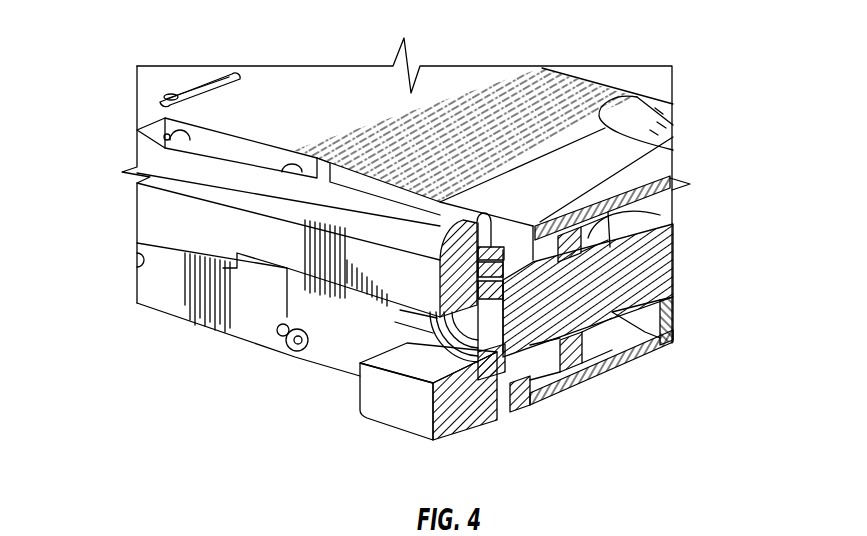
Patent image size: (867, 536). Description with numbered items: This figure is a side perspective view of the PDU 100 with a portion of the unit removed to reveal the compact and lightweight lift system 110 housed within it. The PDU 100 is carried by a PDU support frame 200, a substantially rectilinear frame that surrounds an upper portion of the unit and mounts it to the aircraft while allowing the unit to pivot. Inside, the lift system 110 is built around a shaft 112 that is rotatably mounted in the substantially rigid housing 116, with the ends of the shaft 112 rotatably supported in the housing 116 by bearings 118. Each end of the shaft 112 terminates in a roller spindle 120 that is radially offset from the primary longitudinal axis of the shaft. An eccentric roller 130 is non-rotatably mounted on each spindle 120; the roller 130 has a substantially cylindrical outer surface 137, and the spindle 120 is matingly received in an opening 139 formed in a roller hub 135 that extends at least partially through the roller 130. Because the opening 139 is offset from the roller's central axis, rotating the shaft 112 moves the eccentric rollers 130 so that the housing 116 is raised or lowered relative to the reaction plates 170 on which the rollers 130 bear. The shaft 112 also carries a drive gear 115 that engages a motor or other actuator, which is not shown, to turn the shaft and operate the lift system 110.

The PDU 100 is at (122, 98).
The PDU support frame 200 is at (150, 191).
The outer surfaces 137 is at (493, 236).
The eccentric rollers 130 is at (657, 143).
The housing 116 is at (672, 163).
The shaft 112 is at (673, 226).
The lift system 110 is at (652, 364).
The drive gear 115 is at (583, 345).
The roller spindles 120 is at (575, 390).
The bearings 118 is at (533, 358).
The openings 139 is at (503, 380).
The roller hubs 135 is at (437, 335).
The reaction plates 170 is at (358, 398).